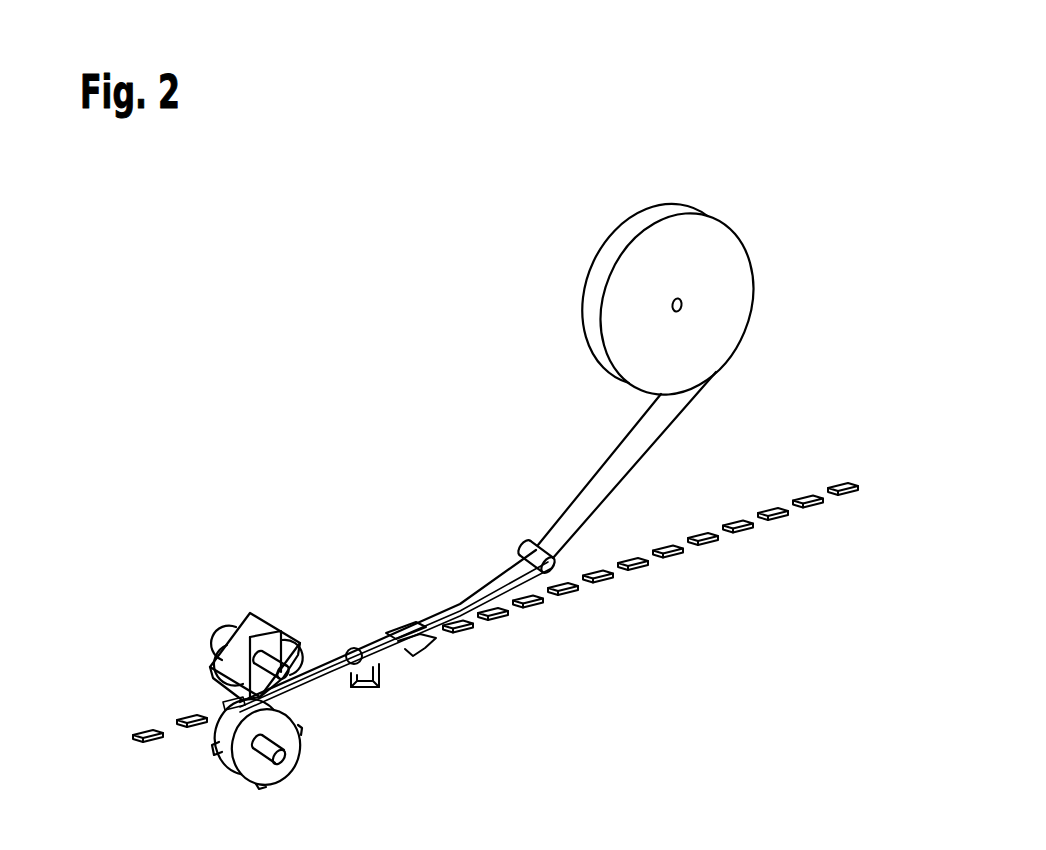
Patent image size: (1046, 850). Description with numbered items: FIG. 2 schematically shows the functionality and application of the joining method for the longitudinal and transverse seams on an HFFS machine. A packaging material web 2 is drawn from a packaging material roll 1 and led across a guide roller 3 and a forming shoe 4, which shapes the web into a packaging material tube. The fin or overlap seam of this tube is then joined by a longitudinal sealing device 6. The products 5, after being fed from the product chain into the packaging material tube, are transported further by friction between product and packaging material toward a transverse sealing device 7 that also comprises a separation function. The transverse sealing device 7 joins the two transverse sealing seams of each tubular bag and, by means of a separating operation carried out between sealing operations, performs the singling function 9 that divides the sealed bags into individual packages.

The packaging material roll 1 is at (623, 278).
The packaging material web 2 is at (626, 459).
The guide roller 3 is at (523, 549).
The forming shoe 4 is at (408, 628).
The products 5 is at (772, 508).
The longitudinal sealing device 6 is at (357, 643).
The transverse sealing device 7 is at (256, 602).
The singling function 9 is at (194, 702).